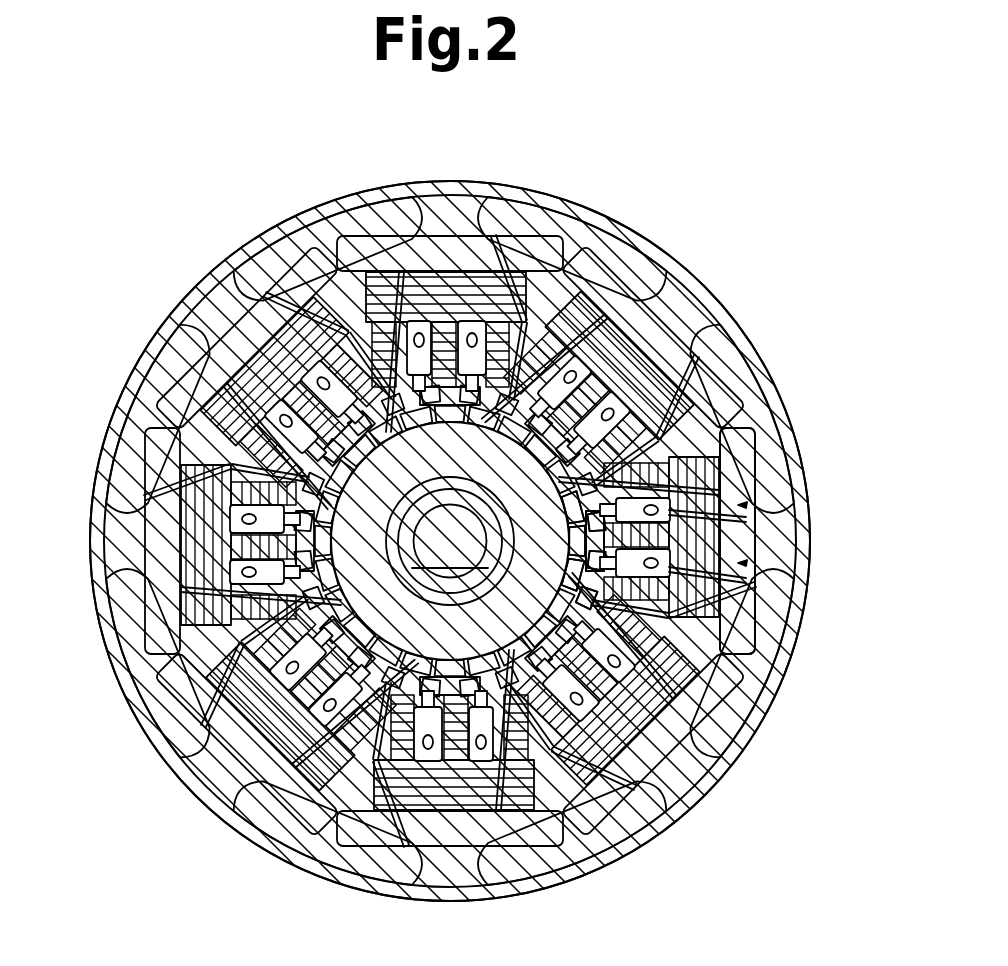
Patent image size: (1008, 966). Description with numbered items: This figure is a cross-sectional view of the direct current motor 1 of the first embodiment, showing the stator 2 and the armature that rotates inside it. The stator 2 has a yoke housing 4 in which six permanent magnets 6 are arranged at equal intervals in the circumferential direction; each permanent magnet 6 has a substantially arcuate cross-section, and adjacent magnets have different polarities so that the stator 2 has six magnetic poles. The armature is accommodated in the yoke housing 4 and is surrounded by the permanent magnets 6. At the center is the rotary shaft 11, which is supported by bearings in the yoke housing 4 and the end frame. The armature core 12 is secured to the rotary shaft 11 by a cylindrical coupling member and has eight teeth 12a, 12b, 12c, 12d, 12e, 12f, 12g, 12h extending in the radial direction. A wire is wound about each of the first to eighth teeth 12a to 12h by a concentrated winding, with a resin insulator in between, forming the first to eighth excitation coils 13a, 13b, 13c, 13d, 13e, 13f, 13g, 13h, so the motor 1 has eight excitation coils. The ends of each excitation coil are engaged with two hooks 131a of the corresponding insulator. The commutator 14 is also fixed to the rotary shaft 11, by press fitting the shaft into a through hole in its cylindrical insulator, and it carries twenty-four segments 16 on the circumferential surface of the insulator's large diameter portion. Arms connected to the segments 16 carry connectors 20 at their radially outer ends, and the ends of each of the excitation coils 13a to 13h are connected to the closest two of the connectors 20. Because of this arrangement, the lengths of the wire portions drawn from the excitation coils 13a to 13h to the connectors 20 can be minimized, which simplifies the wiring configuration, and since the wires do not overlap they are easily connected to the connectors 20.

The direct current motor 1 is at (709, 172).
The stator 2 is at (524, 190).
The yoke housing 4 is at (750, 340).
The permanent magnet 6 is at (330, 230).
The rotary shaft 11 is at (447, 518).
The armature core 12 is at (747, 463).
The first tooth 12a is at (740, 537).
The second tooth 12b is at (690, 758).
The third tooth 12c is at (450, 872).
The fourth tooth 12d is at (243, 750).
The fifth tooth 12e is at (125, 536).
The sixth tooth 12f is at (233, 330).
The seventh tooth 12g is at (440, 242).
The eighth tooth 12h is at (653, 330).
The first excitation coil 13a is at (670, 464).
The second excitation coil 13b is at (665, 640).
The third excitation coil 13c is at (534, 771).
The fourth excitation coil 13d is at (366, 770).
The fifth excitation coil 13e is at (227, 628).
The sixth excitation coil 13f is at (231, 444).
The seventh excitation coil 13g is at (367, 320).
The eighth excitation coil 13h is at (540, 330).
The hook 131a is at (745, 507).
The commutator 14 is at (452, 617).
The segment 16 is at (558, 557).
The connector 20 is at (358, 466).